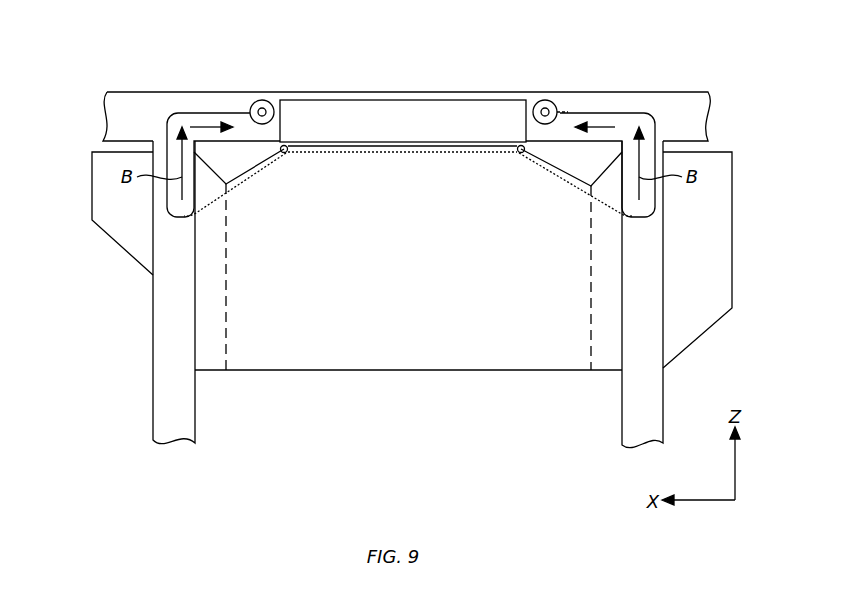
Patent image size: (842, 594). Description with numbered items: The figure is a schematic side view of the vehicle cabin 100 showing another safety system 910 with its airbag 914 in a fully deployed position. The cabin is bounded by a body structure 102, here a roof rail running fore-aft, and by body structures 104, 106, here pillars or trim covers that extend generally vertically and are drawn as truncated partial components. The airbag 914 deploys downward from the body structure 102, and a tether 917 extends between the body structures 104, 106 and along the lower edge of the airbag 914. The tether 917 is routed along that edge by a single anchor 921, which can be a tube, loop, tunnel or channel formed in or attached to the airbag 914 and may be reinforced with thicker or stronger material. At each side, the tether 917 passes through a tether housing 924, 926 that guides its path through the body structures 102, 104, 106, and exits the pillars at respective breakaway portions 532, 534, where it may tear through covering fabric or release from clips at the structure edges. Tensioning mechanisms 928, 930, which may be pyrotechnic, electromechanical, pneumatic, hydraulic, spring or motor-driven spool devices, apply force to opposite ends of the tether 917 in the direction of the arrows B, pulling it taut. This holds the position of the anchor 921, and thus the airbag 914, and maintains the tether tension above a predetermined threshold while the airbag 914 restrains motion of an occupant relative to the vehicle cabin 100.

The vehicle cabin 100 is at (399, 425).
The body structure 102 is at (118, 92).
The body structure 104 is at (153, 408).
The body structure 106 is at (622, 412).
The breakaway portion 532 is at (170, 228).
The breakaway portion 534 is at (646, 226).
The safety system 910 is at (265, 389).
The airbag 914 is at (403, 100).
The tether 917 is at (393, 152).
The anchor 921 is at (311, 152).
The tether housing 924 is at (192, 113).
The tether housing 926 is at (628, 113).
The tensioning mechanism 928 is at (262, 100).
The tensioning mechanism 930 is at (545, 100).